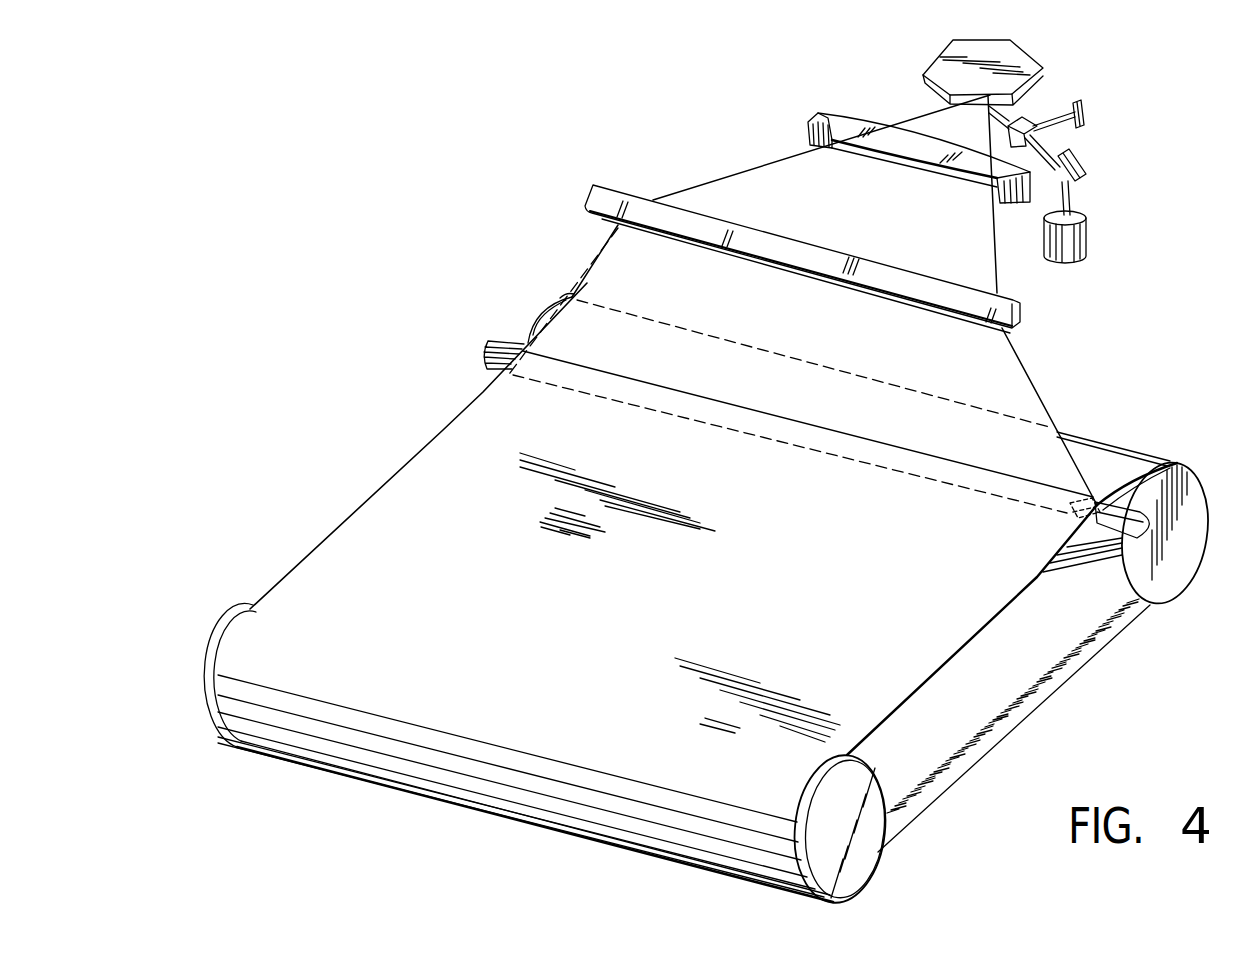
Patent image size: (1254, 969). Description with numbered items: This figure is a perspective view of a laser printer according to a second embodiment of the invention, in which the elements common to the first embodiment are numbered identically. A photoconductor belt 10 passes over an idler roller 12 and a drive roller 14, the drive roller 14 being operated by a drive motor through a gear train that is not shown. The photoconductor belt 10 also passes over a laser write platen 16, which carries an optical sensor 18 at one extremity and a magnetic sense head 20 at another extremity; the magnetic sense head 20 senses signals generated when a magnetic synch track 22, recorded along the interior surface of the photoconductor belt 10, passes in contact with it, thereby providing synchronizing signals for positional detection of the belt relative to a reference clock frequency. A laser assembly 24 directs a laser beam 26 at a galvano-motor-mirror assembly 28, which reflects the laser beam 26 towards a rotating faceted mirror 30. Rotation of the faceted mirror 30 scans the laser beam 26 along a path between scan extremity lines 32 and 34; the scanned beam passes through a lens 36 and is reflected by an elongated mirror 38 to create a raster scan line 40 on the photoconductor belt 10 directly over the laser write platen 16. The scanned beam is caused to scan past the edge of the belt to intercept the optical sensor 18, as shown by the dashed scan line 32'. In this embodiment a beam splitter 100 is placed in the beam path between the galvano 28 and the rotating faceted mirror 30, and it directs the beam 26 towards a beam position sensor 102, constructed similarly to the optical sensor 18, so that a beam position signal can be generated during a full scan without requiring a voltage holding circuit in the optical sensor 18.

The photoconductor belt 10 is at (355, 520).
The idler roller 12 is at (858, 865).
The drive roller 14 is at (1193, 492).
The laser write platen 16 is at (1148, 530).
The optical sensor 18 is at (492, 340).
The magnetic sense head 20 is at (1070, 513).
The magnetic synch track 22 is at (1043, 675).
The laser assembly 24 is at (1080, 240).
The laser beam 26 is at (1053, 145).
The galvano-motor-mirror assembly 28 is at (1080, 163).
The rotating faceted mirror 30 is at (942, 65).
The scan extremity line 32 is at (812, 300).
The dashed scan line 32' is at (787, 370).
The scan extremity line 34 is at (993, 232).
The lens 36 is at (852, 88).
The elongated mirror 38 is at (590, 197).
The raster scan line 40 is at (803, 423).
The beam splitter 100 is at (1033, 120).
The beam position sensor 102 is at (1087, 112).